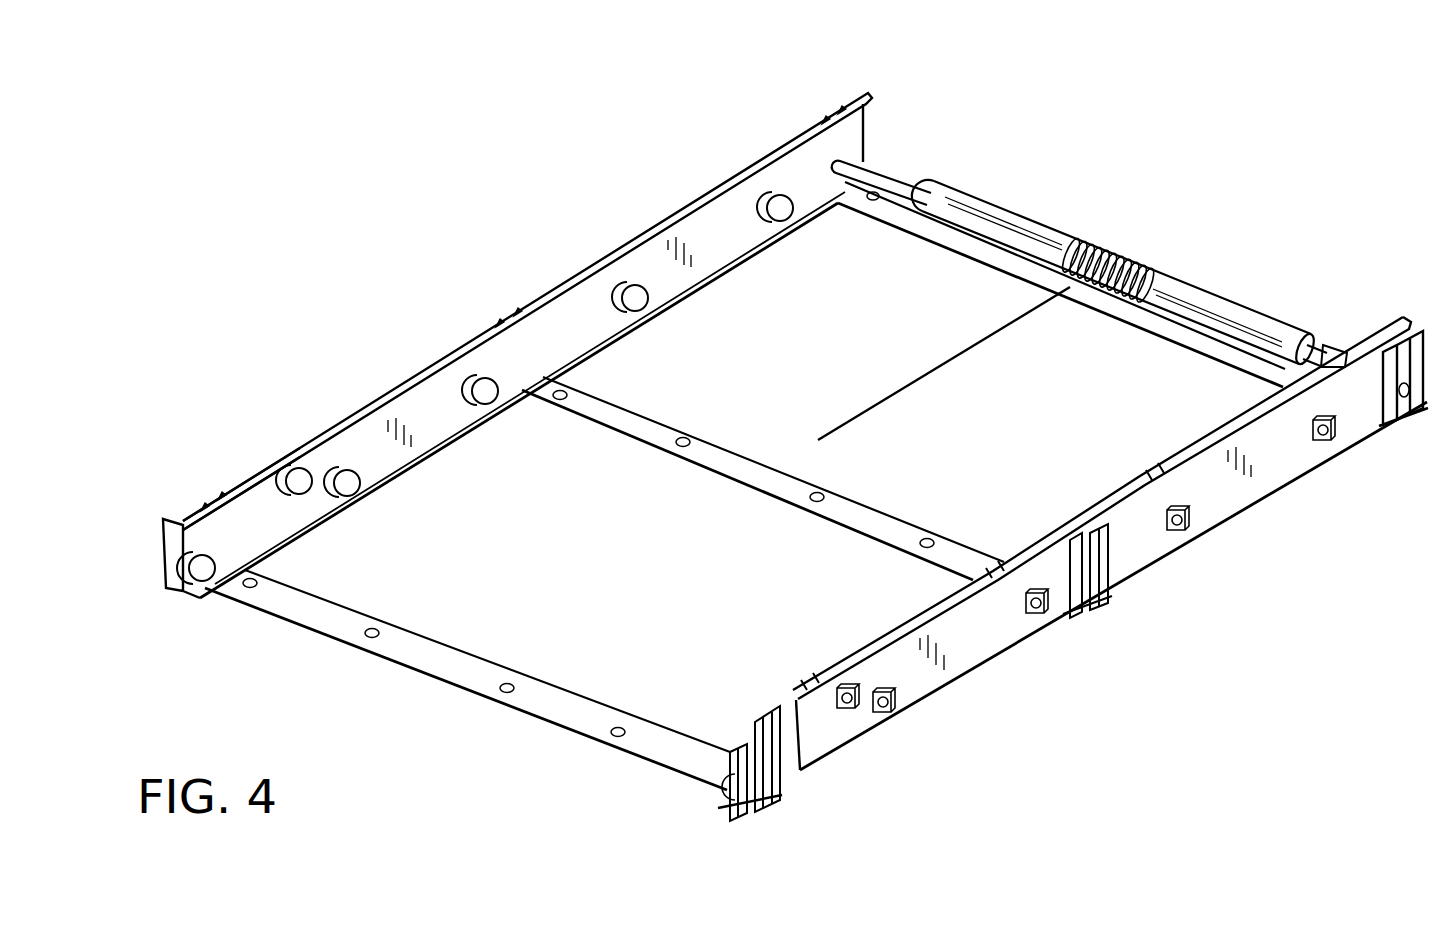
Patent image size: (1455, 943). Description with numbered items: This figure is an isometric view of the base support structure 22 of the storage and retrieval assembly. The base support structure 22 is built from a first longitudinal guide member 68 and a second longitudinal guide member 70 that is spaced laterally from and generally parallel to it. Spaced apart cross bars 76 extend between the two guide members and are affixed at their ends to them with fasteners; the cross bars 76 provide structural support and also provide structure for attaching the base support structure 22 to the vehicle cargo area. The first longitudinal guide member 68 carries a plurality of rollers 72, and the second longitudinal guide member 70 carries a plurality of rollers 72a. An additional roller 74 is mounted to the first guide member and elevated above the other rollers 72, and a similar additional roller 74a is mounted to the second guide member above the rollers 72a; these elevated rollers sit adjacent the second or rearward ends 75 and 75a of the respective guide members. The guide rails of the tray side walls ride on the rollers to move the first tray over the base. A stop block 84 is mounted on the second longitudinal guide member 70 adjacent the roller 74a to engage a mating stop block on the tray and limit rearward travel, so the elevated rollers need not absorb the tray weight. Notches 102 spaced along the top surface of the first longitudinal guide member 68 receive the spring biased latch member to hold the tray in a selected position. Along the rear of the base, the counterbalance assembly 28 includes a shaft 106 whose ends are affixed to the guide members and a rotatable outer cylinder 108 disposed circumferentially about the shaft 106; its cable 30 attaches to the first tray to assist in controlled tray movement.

The base support structure 22 is at (1287, 521).
The counterbalance assembly 28 is at (1015, 194).
The cable 30 is at (885, 387).
The first longitudinal guide member 68 is at (1388, 333).
The second longitudinal guide member 70 is at (768, 188).
The rollers 72 is at (1325, 447).
The rollers 72a is at (757, 205).
The additional roller 74 is at (847, 714).
The additional roller 74a is at (238, 515).
The second or rearward end 75 is at (823, 753).
The second or rearward end 75a is at (213, 497).
The cross bars 76 is at (427, 675).
The stop block 84 is at (290, 466).
The notches 102 is at (1316, 355).
The shaft 106 is at (888, 180).
The rotatable outer cylinder 108 is at (980, 207).